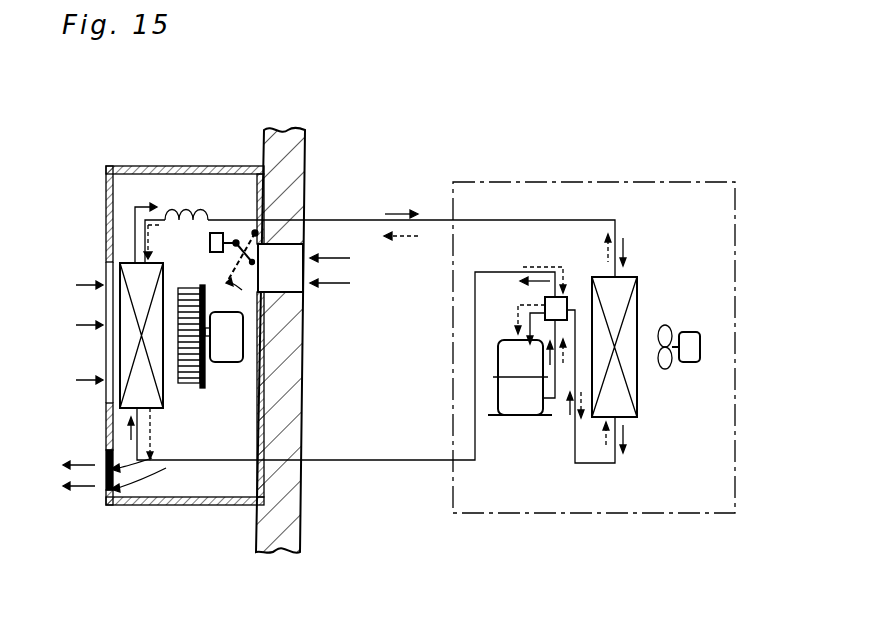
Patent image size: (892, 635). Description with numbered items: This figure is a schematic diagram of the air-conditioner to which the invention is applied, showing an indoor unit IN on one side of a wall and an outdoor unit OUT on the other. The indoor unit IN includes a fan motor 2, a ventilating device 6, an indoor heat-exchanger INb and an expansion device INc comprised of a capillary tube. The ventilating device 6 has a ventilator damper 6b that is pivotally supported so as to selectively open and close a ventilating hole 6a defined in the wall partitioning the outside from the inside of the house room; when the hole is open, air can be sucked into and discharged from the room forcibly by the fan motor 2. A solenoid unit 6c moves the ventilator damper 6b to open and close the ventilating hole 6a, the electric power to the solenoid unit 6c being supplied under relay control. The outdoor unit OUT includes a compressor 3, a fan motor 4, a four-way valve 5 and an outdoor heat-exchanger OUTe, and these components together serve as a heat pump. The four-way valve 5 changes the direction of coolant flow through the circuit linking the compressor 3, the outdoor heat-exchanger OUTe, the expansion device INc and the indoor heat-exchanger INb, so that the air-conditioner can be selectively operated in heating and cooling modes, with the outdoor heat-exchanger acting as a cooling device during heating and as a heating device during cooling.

The indoor unit IN is at (150, 166).
The indoor heat-exchanger INb is at (120, 356).
The expansion device INc is at (186, 208).
The outdoor unit OUT is at (590, 182).
The outdoor heat-exchanger OUTe is at (637, 394).
The fan motor 2 is at (230, 362).
The compressor 3 is at (521, 416).
The fan motor 4 is at (690, 340).
The 4-way valve 5 is at (560, 303).
The ventilating device 6 is at (252, 262).
The ventilating hole 6a is at (283, 255).
The ventilating damper 6b is at (246, 270).
The solenoid unit 6c is at (220, 232).